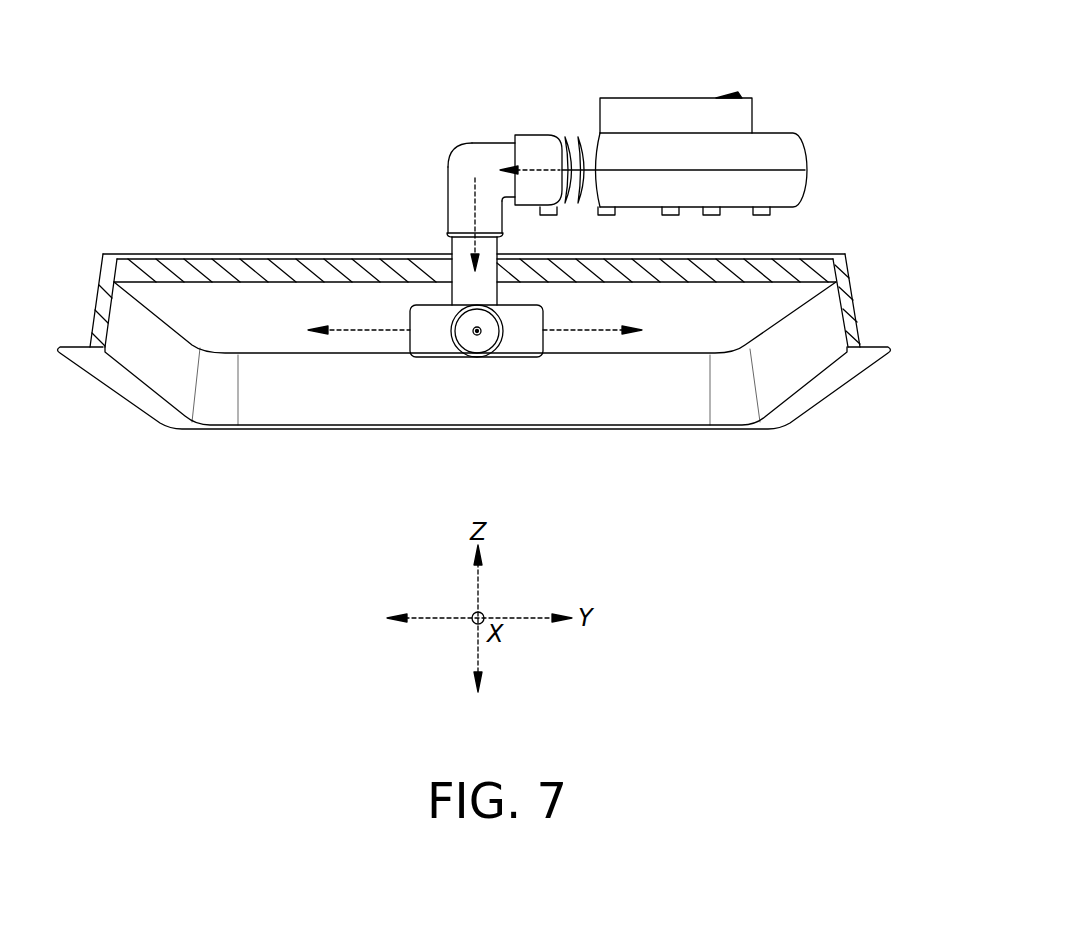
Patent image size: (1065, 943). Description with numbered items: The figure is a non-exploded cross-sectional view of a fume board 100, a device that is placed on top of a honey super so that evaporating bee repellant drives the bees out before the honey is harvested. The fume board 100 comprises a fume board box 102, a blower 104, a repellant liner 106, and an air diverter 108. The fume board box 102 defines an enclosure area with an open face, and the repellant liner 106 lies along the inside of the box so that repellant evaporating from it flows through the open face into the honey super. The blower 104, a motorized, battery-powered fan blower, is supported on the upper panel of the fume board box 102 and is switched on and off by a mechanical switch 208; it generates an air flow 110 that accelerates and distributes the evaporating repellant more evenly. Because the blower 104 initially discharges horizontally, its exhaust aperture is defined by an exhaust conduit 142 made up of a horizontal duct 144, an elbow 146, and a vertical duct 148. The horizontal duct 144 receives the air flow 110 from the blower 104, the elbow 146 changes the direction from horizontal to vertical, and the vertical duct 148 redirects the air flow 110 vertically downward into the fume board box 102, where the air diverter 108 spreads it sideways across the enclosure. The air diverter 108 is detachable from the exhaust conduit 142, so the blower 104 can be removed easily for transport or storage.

The fume board 100 is at (554, 235).
The fume board box 102 is at (803, 365).
The blower 104 is at (785, 138).
The repellant liner 106 is at (690, 282).
The air diverter 108 is at (532, 320).
The air flow 110 is at (472, 195).
The exhaust conduit 142 is at (473, 127).
The horizontal duct 144 is at (473, 143).
The elbow 146 is at (467, 160).
The vertical duct 148 is at (460, 208).
The mechanical switch 208 is at (740, 97).